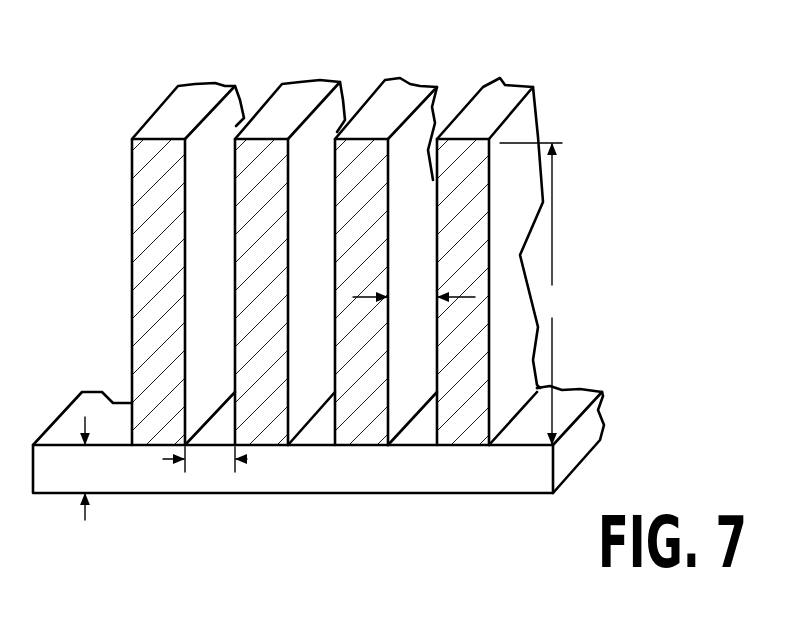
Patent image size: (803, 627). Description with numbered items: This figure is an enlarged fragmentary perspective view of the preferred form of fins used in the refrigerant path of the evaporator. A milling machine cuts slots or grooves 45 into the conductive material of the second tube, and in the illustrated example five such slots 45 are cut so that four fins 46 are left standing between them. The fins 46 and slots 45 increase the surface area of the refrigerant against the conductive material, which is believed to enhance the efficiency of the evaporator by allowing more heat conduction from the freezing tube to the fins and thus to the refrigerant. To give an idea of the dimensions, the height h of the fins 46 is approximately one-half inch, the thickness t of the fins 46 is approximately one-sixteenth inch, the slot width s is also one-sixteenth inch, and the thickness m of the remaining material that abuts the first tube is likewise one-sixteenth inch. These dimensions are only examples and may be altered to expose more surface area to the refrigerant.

The fins 46 is at (198, 95).
The slots 45 is at (230, 124).
The thickness of the remaining material m is at (85, 468).
The slot width s is at (205, 459).
The thickness of the fins t is at (414, 298).
The height of the fins h is at (531, 293).